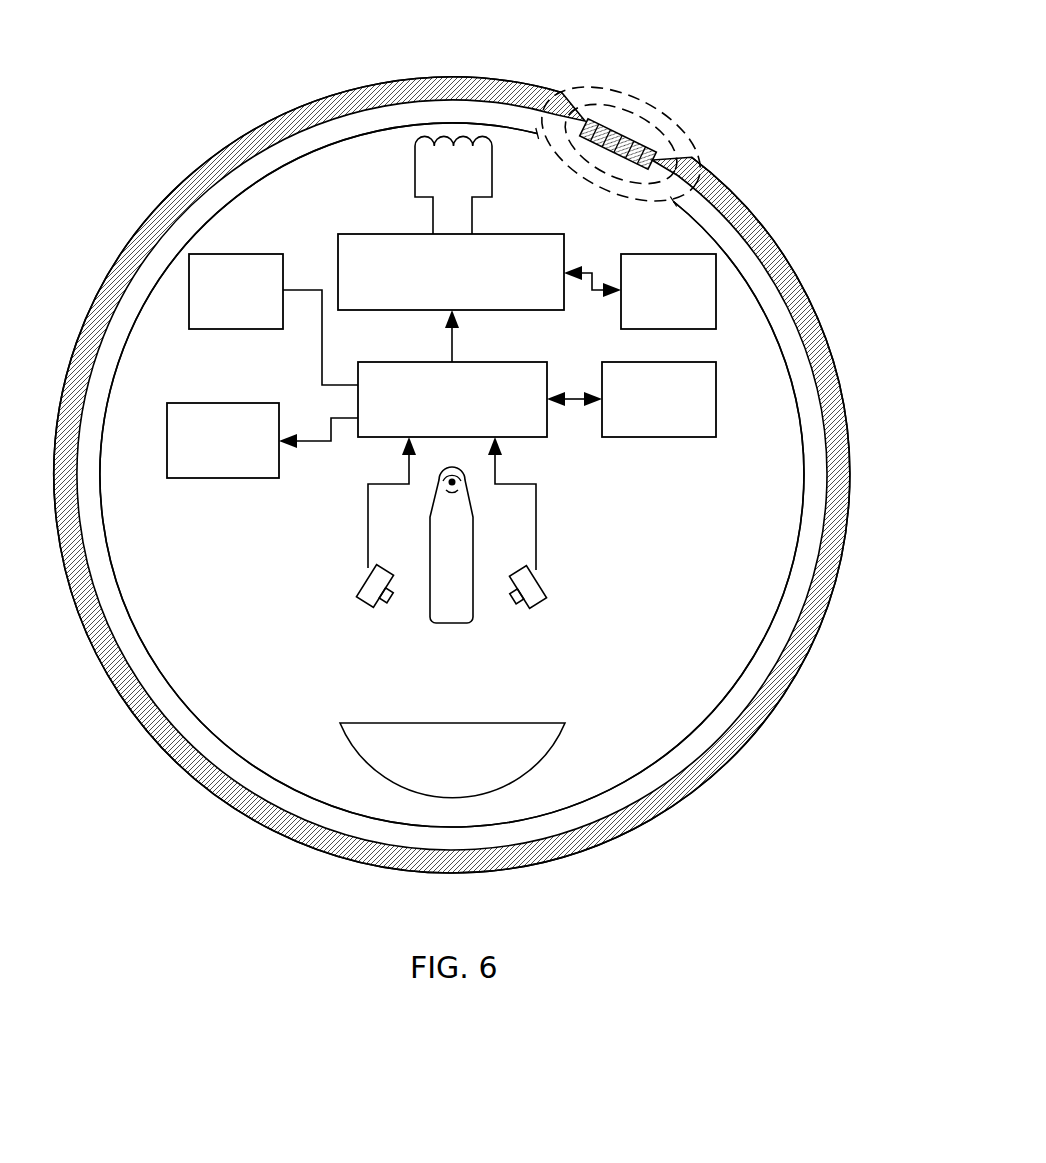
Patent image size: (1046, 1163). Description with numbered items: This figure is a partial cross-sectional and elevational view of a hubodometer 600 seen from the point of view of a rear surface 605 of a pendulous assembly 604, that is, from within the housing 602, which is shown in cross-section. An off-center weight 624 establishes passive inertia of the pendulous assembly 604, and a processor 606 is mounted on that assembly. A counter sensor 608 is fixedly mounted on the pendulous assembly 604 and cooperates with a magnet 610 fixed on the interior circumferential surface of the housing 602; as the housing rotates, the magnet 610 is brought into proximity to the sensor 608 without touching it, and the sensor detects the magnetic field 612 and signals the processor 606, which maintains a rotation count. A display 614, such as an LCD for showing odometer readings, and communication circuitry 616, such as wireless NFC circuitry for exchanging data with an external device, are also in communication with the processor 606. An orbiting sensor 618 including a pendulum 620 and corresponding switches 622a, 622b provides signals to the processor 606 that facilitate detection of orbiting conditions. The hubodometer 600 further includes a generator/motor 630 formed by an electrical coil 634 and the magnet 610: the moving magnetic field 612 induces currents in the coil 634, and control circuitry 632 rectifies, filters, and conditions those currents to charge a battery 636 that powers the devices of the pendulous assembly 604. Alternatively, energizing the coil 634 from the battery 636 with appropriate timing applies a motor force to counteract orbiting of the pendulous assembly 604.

The hubodometer 600 is at (183, 78).
The housing 602 is at (193, 777).
The pendulous assembly 604 is at (148, 587).
The rear surface 605 is at (770, 478).
The processor 606 is at (472, 362).
The counter sensor 608 is at (237, 329).
The magnet 610 is at (614, 135).
The magnetic field 612 is at (680, 128).
The display 614 is at (232, 478).
The communication circuitry 616 is at (658, 437).
The orbiting sensor 618 is at (328, 524).
The pendulum 620 is at (452, 623).
The switch 622a is at (372, 606).
The switch 622b is at (532, 608).
The off-center weight 624 is at (533, 741).
The generator/motor 630 is at (498, 48).
The control circuitry 632 is at (397, 310).
The electrical coil 634 is at (413, 143).
The battery 636 is at (620, 310).